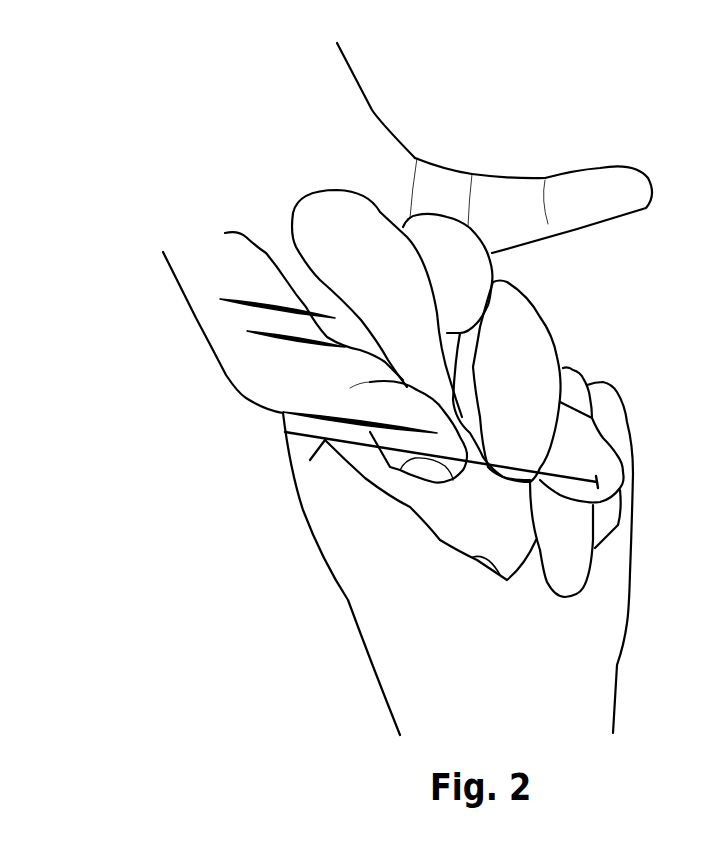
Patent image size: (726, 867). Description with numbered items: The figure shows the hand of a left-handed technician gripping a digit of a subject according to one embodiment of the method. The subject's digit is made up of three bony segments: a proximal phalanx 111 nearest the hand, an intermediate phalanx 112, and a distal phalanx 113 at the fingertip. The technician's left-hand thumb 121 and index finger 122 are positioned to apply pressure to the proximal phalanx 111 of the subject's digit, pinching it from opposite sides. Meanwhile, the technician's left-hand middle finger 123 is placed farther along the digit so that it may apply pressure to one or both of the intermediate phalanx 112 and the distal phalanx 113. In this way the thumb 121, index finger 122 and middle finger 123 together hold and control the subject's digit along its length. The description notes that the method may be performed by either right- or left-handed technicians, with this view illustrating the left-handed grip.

The proximal phalanx 111 is at (449, 344).
The intermediate phalanx 112 is at (476, 374).
The distal phalanx 113 is at (437, 433).
The left-hand thumb 121 is at (330, 207).
The index finger 122 is at (463, 259).
The middle finger 123 is at (490, 344).